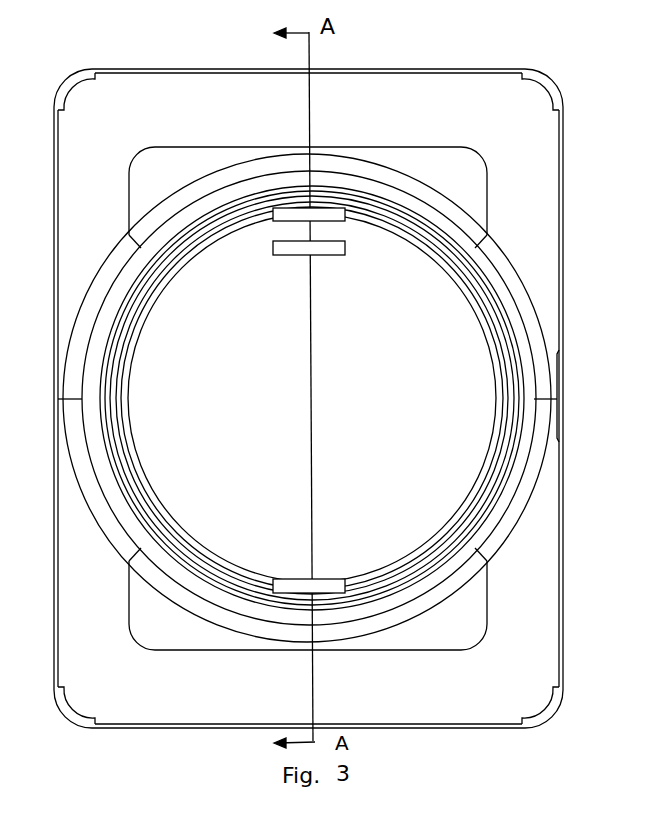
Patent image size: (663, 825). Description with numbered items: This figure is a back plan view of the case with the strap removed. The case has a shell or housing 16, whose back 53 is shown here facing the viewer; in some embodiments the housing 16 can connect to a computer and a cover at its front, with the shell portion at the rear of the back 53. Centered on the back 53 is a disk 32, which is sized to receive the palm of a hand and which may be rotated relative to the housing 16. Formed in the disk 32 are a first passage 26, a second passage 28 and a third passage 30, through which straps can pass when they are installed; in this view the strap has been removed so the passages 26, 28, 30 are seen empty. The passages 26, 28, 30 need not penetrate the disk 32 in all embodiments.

The housing 16 is at (543, 129).
The back 53 is at (540, 583).
The third passage 30 is at (362, 219).
The disk 32 is at (238, 443).
The second passage 28 is at (354, 257).
The first passage 26 is at (356, 573).